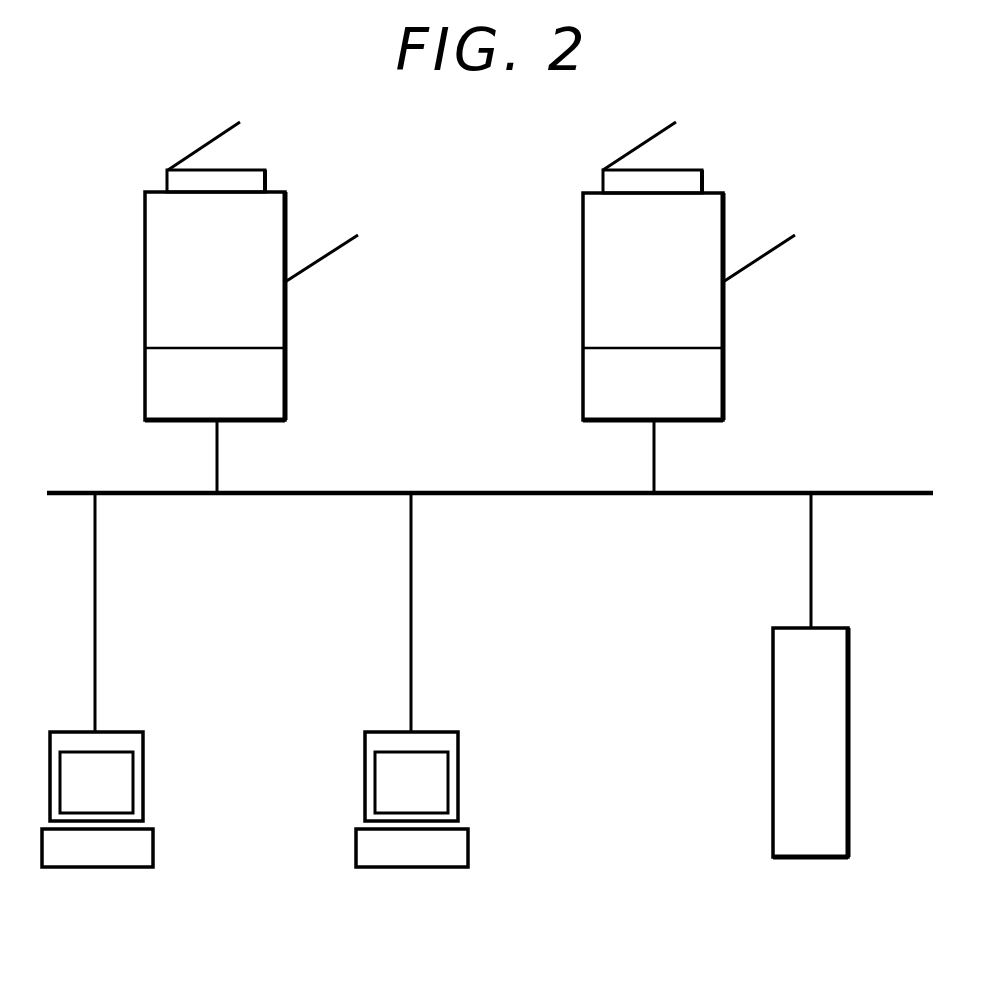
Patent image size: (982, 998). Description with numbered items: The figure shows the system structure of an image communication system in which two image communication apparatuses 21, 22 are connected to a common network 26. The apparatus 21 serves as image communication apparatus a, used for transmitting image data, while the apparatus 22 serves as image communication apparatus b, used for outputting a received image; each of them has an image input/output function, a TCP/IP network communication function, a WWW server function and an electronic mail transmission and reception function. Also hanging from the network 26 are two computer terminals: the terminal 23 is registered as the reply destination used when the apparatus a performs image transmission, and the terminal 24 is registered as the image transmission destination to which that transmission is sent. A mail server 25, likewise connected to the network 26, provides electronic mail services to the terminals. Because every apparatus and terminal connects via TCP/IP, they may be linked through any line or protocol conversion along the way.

The image communication apparatus 21 is at (235, 170).
The image communication apparatus 22 is at (672, 170).
The terminal 23 is at (115, 732).
The terminal 24 is at (430, 732).
The mail server 25 is at (848, 658).
The network 26 is at (310, 491).